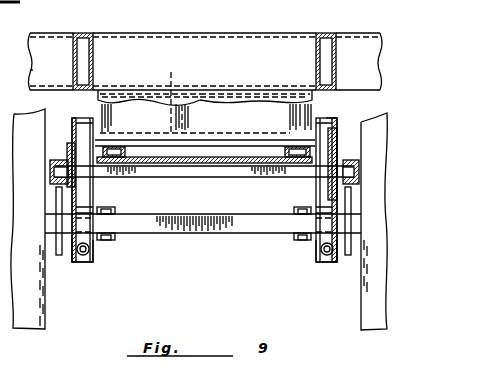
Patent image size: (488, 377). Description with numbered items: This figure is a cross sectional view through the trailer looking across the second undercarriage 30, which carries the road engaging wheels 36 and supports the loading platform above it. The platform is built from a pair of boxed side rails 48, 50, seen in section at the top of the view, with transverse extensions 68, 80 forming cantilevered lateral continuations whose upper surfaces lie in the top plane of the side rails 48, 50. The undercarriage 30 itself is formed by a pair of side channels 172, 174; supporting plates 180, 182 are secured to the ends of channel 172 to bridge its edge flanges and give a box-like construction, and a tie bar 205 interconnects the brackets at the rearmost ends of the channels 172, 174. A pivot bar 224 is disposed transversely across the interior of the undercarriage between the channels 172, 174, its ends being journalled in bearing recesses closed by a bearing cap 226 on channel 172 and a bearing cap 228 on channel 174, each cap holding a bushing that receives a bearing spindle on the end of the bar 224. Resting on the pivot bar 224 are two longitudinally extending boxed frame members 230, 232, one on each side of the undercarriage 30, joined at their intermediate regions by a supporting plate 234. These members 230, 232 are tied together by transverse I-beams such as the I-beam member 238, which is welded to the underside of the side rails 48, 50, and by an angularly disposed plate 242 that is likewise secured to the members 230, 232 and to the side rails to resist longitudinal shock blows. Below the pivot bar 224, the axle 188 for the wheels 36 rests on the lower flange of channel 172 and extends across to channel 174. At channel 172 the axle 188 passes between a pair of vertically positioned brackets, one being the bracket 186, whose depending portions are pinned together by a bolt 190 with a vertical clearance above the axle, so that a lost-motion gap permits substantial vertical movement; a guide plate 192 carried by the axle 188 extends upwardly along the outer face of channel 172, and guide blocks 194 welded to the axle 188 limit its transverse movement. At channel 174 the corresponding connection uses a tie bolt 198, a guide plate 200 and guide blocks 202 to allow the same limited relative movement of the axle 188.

The side rail 48 is at (73, 45).
The transverse extension 68 is at (33, 72).
The transverse extension 80 is at (352, 33).
The side rail 50 is at (340, 48).
The second undercarriage 30 is at (328, 117).
The side channel 174 is at (340, 125).
The side channel 172 is at (78, 118).
The I-beam member 238 is at (113, 113).
The tie bar 205 is at (188, 97).
The plate 242 is at (238, 102).
The boxed frame member 230 is at (120, 134).
The supporting plate 234 is at (180, 157).
The boxed frame member 232 is at (292, 148).
The bearing cap 226 is at (67, 160).
The bearing cap 228 is at (350, 160).
The supporting plate 180 is at (78, 200).
The supporting plate 182 is at (330, 196).
The guide blocks 194 is at (122, 226).
The pivot bar 224 is at (232, 182).
The bracket 186 is at (93, 242).
The bolt 190 is at (92, 256).
The guide plate 192 is at (60, 256).
The axle 188 is at (224, 234).
The guide blocks 202 is at (298, 207).
The tie bolt 198 is at (318, 262).
The guide plate 200 is at (348, 257).
The road engaging wheels 36 is at (45, 325).